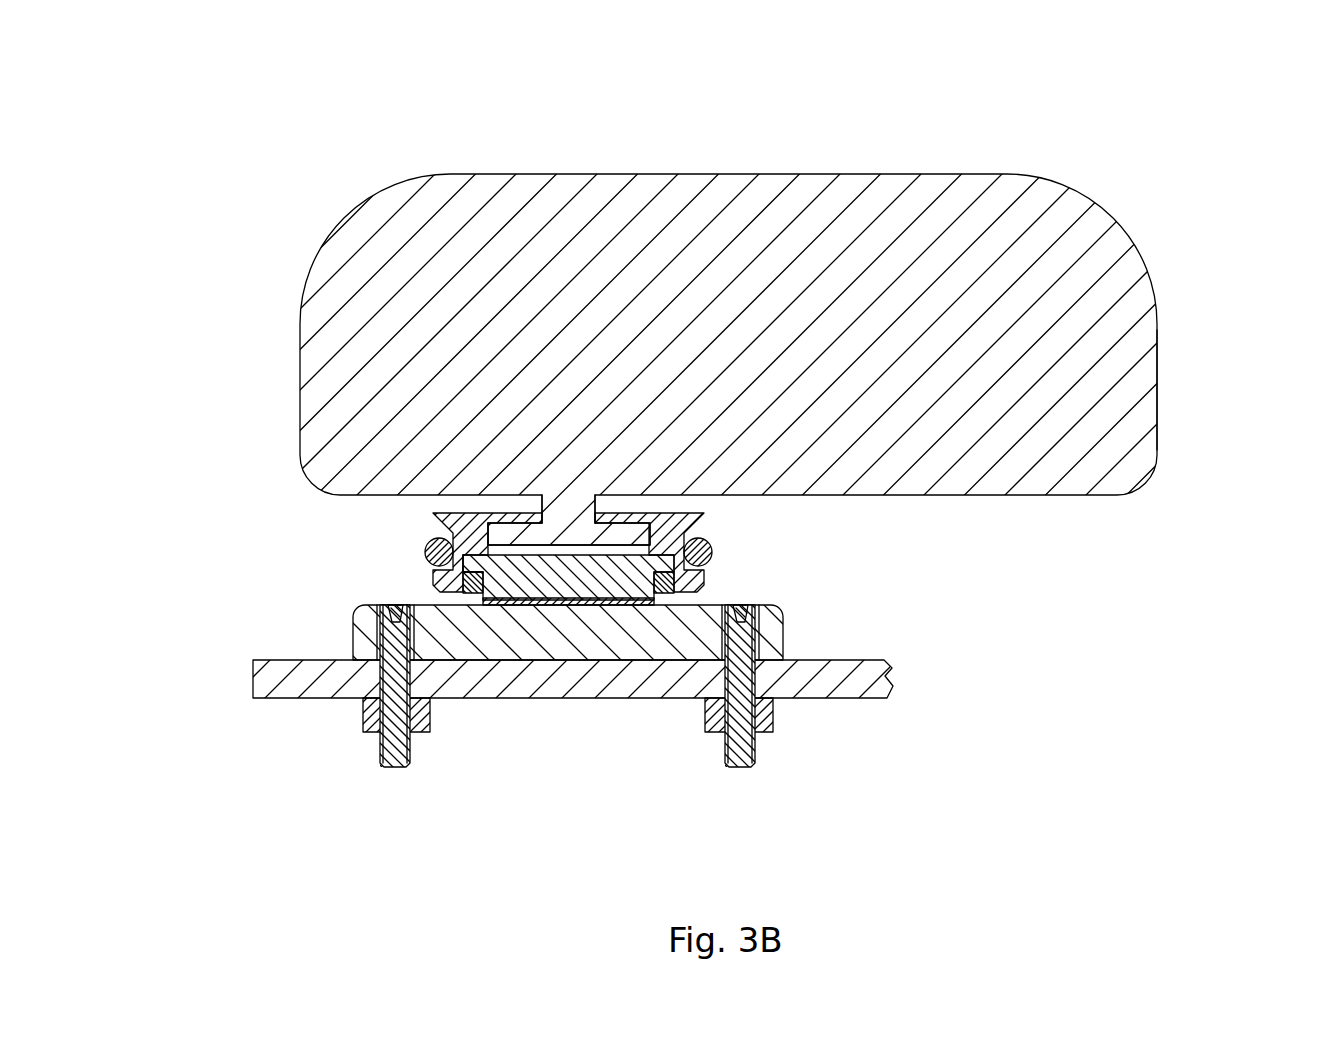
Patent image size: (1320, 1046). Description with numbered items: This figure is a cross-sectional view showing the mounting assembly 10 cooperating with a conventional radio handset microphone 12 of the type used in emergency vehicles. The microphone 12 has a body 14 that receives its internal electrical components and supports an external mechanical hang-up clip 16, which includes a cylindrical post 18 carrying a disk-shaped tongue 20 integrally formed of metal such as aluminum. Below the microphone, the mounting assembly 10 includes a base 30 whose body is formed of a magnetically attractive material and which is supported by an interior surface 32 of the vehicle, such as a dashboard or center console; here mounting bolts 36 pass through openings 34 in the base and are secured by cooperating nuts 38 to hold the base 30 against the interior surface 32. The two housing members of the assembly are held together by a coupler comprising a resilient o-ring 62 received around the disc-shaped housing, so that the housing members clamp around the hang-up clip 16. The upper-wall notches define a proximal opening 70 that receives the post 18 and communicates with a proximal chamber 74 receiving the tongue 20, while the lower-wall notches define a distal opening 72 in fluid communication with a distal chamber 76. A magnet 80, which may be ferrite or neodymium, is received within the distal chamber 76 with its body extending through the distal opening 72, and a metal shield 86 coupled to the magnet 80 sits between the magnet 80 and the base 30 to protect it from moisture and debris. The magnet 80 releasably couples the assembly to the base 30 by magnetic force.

The mounting assembly 10 is at (660, 462).
The radio handset microphone 12 is at (903, 156).
The body 14 is at (1160, 368).
The mechanical hang-up clip 16 is at (523, 497).
The cylindrical post 18 is at (590, 512).
The disk-shaped tongue 20 is at (612, 518).
The base 30 is at (795, 641).
The interior surface 32 is at (893, 665).
The openings 34 is at (396, 605).
The mounting bolts 36 is at (395, 770).
The nuts 38 is at (362, 710).
The o-ring 62 is at (425, 552).
The proximal opening 70 is at (522, 500).
The distal opening 72 is at (497, 592).
The proximal chamber 74 is at (712, 552).
The distal chamber 76 is at (476, 576).
The magnet 80 is at (577, 602).
The shield 86 is at (668, 604).